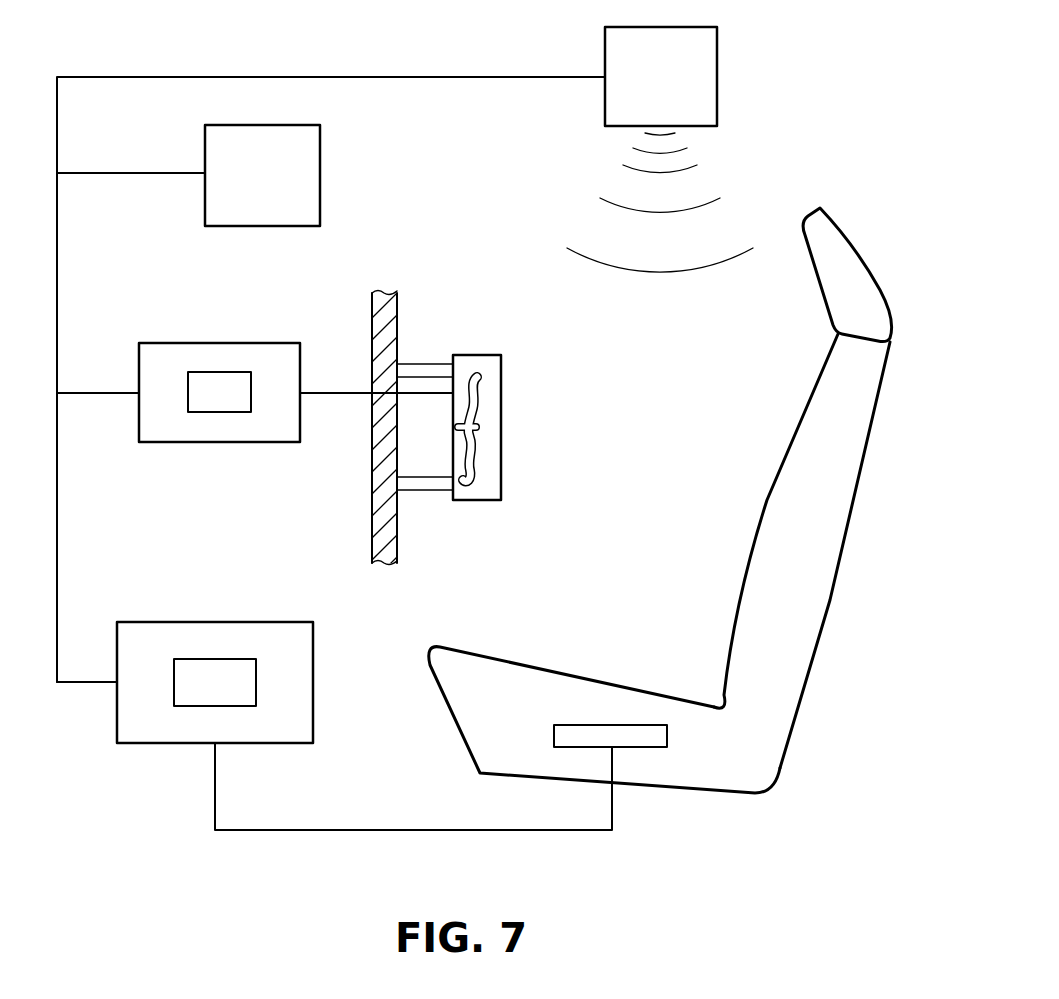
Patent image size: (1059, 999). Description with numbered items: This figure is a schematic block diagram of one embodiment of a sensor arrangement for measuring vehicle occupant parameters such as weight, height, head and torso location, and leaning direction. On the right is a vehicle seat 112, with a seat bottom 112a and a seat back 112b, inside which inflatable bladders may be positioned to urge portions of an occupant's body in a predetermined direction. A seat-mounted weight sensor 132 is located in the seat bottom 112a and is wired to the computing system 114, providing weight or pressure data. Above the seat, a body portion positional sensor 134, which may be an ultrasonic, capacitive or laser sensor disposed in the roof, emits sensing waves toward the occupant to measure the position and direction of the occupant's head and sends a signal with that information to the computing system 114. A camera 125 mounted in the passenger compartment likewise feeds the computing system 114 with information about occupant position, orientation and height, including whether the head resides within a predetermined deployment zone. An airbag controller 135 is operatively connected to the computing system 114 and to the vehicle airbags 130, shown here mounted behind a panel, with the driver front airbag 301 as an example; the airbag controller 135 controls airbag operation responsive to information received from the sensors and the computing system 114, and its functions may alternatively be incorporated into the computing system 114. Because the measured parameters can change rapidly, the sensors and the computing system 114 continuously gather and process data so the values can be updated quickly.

The vehicle seat 112 is at (660, 543).
The seat bottom 112a is at (655, 763).
The seat back 112b is at (800, 490).
The computing system 114 is at (199, 694).
The camera 125 is at (246, 186).
The airbag 130 is at (478, 355).
The seat-mounted weight sensor 132 is at (609, 725).
The body portion positional sensor 134 is at (645, 86).
The airbag controller 135 is at (203, 403).
The driver front airbag 301 is at (480, 425).